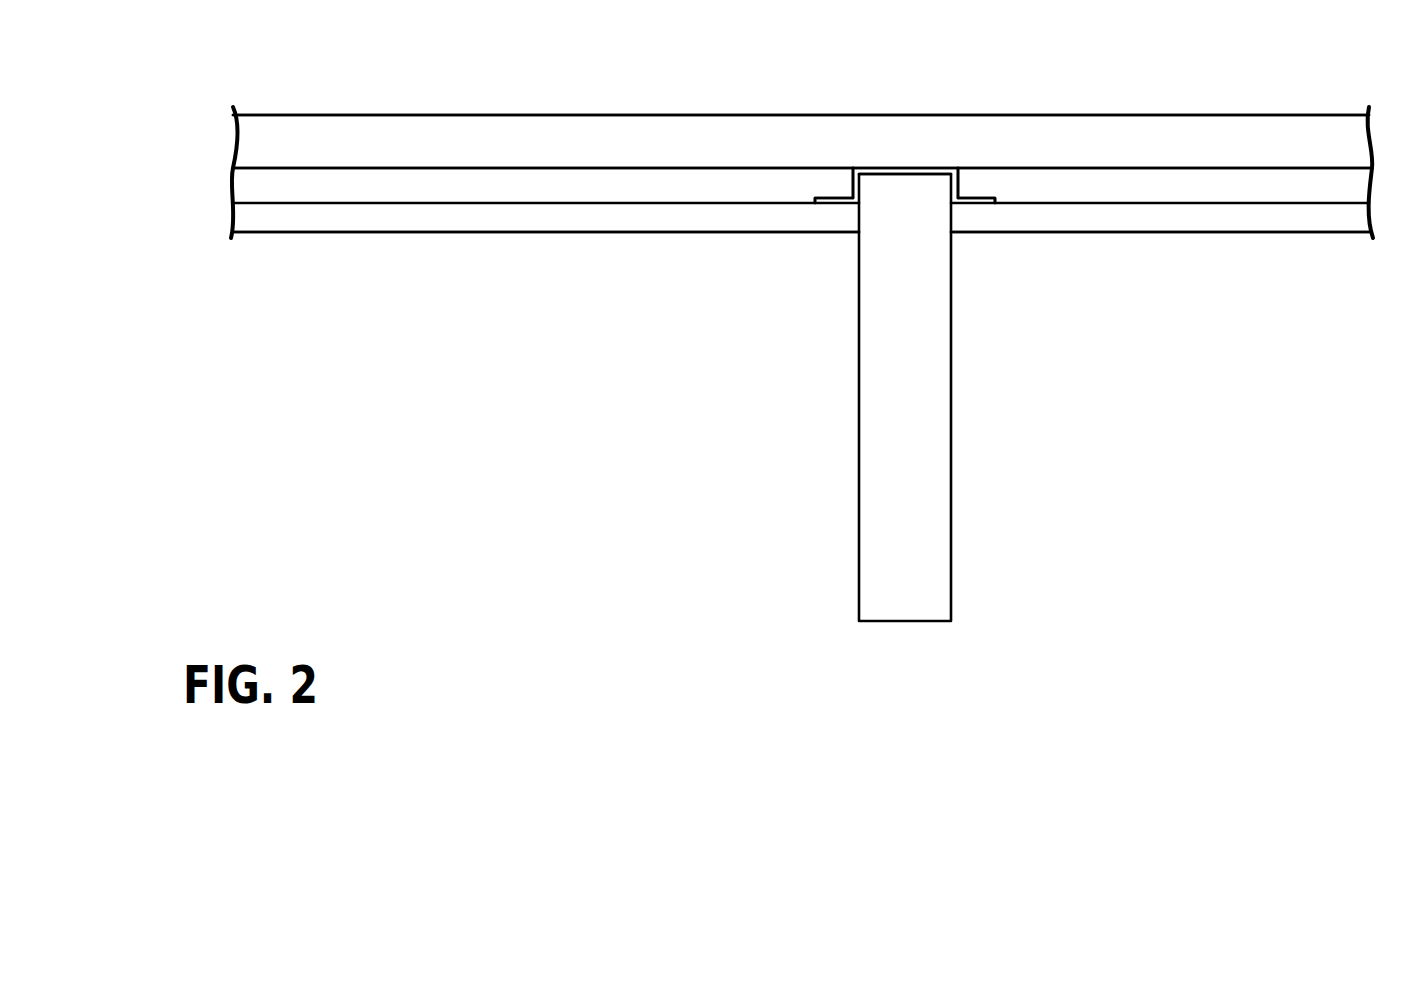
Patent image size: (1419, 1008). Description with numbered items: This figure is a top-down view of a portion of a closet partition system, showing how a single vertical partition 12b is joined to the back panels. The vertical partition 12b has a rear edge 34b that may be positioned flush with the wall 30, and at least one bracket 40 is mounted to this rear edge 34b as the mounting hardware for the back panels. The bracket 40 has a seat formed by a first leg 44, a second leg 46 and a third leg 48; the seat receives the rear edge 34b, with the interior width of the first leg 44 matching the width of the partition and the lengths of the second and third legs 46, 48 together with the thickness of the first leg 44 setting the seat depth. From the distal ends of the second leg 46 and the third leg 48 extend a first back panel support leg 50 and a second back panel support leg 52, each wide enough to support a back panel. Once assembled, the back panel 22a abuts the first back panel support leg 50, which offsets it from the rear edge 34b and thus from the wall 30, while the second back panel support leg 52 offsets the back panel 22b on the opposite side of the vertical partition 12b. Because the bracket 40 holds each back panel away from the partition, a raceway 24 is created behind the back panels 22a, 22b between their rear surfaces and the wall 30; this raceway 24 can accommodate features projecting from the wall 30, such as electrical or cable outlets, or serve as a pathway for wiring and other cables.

The vertical partition 12b is at (923, 495).
The back panel 22a is at (592, 233).
The back panel 22b is at (1175, 233).
The raceway 24 is at (405, 186).
The wall 30 is at (589, 140).
The rear edge 34b is at (913, 176).
The bracket 40 is at (915, 167).
The first leg 44 is at (888, 167).
The second leg 46 is at (852, 170).
The third leg 48 is at (960, 183).
The first back panel support leg 50 is at (835, 202).
The second back panel support leg 52 is at (970, 203).